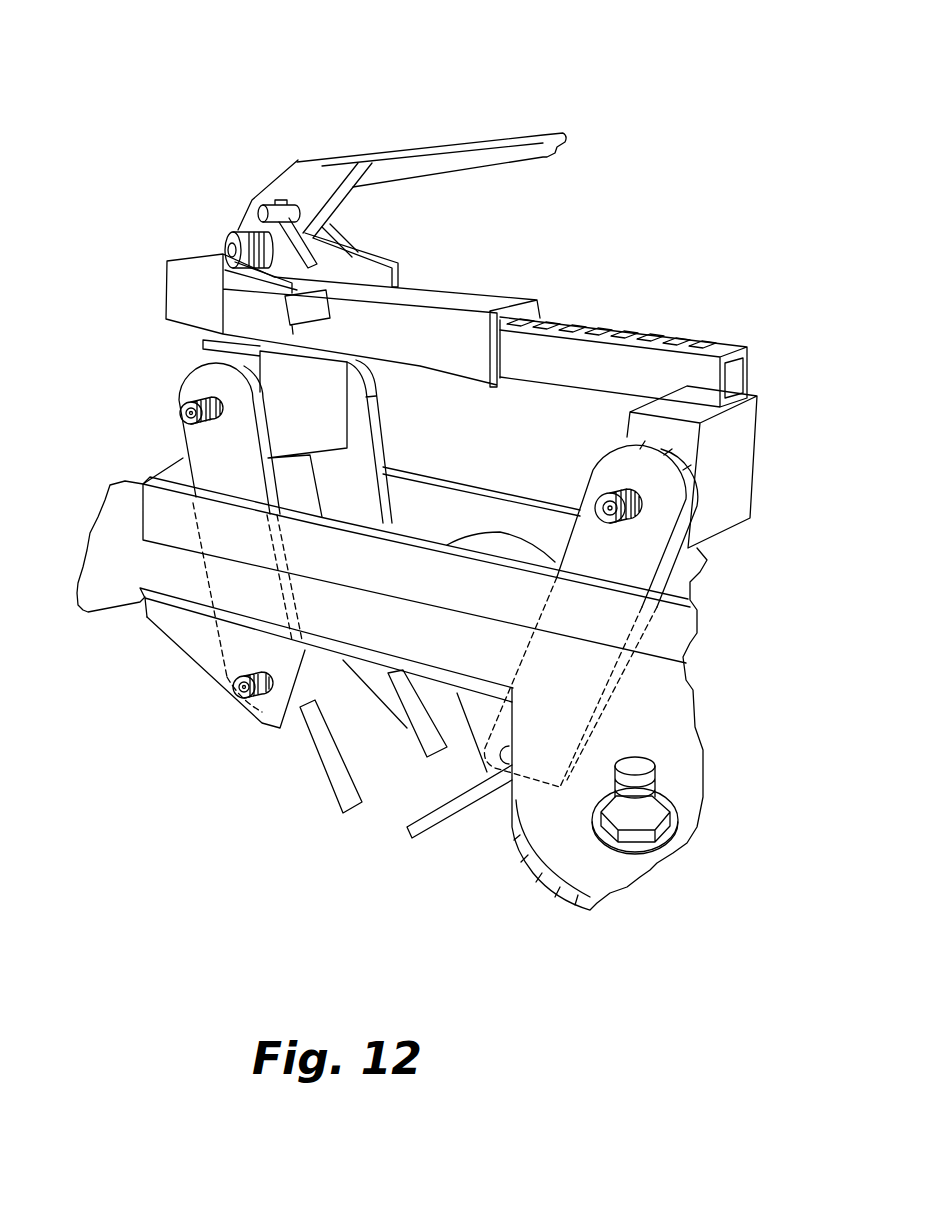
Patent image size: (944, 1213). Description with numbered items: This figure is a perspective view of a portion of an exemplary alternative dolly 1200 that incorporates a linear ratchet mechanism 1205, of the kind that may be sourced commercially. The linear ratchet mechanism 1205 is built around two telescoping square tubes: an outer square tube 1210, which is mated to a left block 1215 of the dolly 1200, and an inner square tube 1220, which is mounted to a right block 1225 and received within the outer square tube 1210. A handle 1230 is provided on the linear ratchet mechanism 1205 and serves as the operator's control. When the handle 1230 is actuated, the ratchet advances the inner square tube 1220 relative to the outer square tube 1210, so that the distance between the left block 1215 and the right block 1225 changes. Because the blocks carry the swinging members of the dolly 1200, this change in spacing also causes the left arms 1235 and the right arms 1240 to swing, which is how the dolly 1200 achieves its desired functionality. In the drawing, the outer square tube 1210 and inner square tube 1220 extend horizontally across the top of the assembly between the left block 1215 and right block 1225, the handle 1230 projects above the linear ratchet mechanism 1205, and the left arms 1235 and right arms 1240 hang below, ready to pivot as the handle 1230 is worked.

The dolly 1200 is at (678, 147).
The linear ratchet mechanism 1205 is at (225, 188).
The outer square tube 1210 is at (460, 293).
The left block 1215 is at (315, 417).
The inner square tube 1220 is at (642, 320).
The right block 1225 is at (740, 465).
The handle 1230 is at (443, 143).
The left arms 1235 is at (404, 733).
The right arms 1240 is at (442, 813).